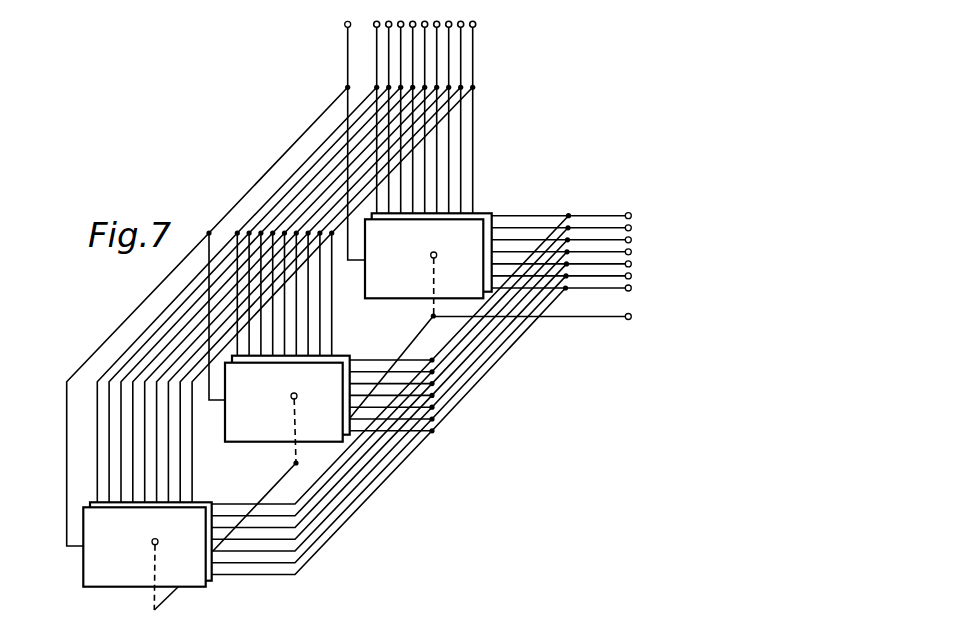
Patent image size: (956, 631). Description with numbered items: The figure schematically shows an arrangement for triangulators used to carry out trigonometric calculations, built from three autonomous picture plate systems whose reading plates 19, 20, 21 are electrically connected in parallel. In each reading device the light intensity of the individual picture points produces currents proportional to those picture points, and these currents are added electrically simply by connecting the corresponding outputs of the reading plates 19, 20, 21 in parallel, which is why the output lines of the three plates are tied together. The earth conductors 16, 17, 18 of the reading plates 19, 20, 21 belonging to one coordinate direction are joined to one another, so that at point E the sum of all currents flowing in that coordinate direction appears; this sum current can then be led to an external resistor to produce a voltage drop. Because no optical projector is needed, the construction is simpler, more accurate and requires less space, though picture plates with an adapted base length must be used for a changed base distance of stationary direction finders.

The earth conductor 16 is at (66, 445).
The earth conductor 17 is at (208, 258).
The earth conductor 18 is at (347, 63).
The reading plate 19 is at (388, 290).
The reading plate 20 is at (250, 437).
The reading plate 21 is at (103, 580).